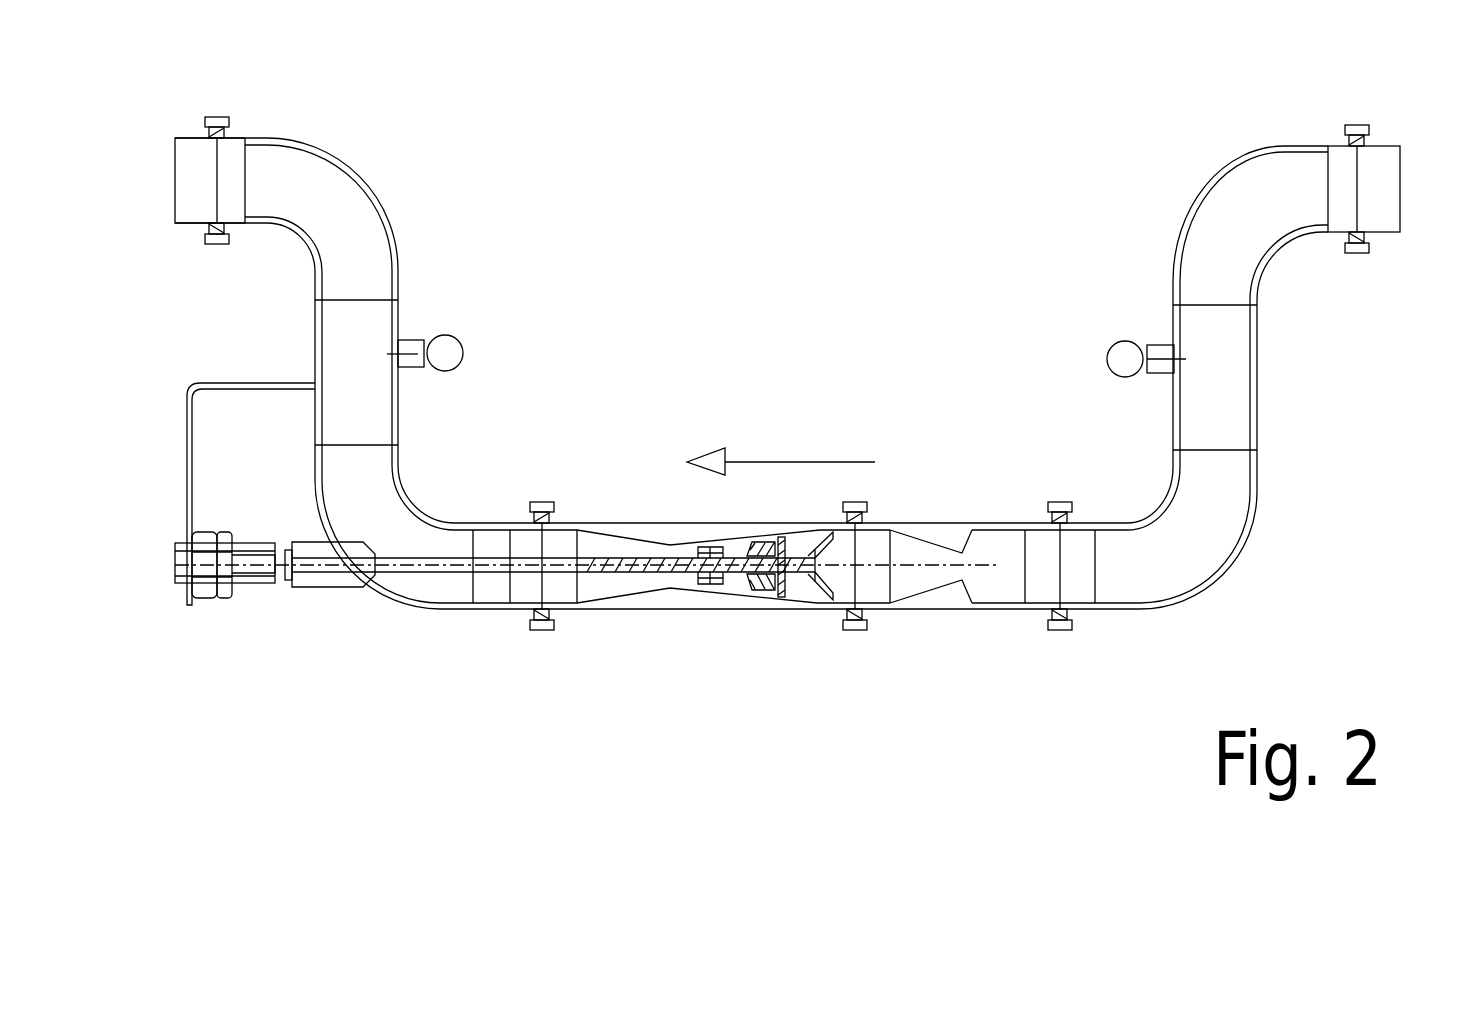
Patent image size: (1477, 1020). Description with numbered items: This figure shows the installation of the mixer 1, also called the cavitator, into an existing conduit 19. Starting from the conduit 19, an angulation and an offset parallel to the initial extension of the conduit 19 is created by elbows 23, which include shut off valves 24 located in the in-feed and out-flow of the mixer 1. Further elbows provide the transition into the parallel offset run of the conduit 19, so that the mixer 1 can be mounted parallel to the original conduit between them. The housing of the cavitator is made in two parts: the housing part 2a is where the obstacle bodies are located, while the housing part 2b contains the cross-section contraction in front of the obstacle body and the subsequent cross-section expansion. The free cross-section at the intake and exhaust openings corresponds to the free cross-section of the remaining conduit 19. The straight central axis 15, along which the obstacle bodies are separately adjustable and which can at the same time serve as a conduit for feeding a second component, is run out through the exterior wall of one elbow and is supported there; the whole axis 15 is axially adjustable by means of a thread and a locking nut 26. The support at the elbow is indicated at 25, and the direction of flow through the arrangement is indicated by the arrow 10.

The mixer 1 is at (764, 650).
The housing part 2a is at (665, 603).
The housing part 2b is at (950, 606).
The flow direction 10 is at (827, 462).
The central axis 15 is at (420, 555).
The conduit 19 is at (1377, 158).
The elbows 23 is at (1242, 162).
The shut off valves 24 is at (1157, 350).
The pipe section / holder 25 is at (1207, 640).
The locking nut 26 is at (228, 532).